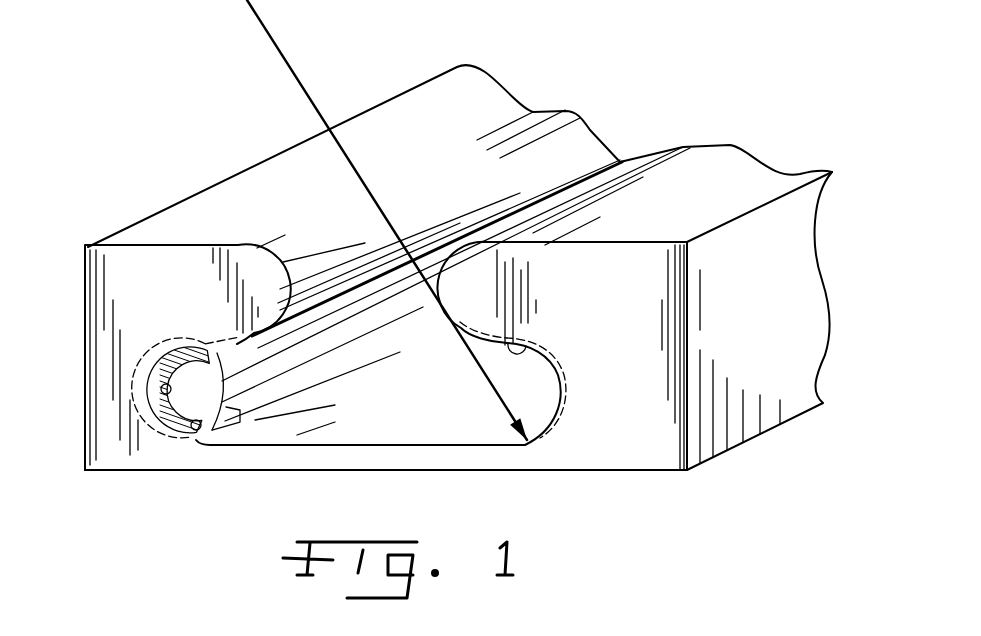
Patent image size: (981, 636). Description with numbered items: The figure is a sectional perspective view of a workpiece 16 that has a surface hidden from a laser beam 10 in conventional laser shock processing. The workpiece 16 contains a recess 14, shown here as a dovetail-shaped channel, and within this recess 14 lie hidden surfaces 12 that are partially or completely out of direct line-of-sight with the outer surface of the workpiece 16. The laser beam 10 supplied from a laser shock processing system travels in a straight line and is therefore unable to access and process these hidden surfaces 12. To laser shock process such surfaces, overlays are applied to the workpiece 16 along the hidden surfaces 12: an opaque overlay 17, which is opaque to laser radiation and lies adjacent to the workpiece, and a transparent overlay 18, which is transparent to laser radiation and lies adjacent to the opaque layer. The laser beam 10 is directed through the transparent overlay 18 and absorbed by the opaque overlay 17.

The laser beam 10 is at (289, 64).
The hidden surface 12 is at (160, 388).
The recess 14 is at (357, 405).
The workpiece 16 is at (625, 412).
The opaque overlay 17 is at (195, 438).
The transparent overlay 18 is at (250, 412).